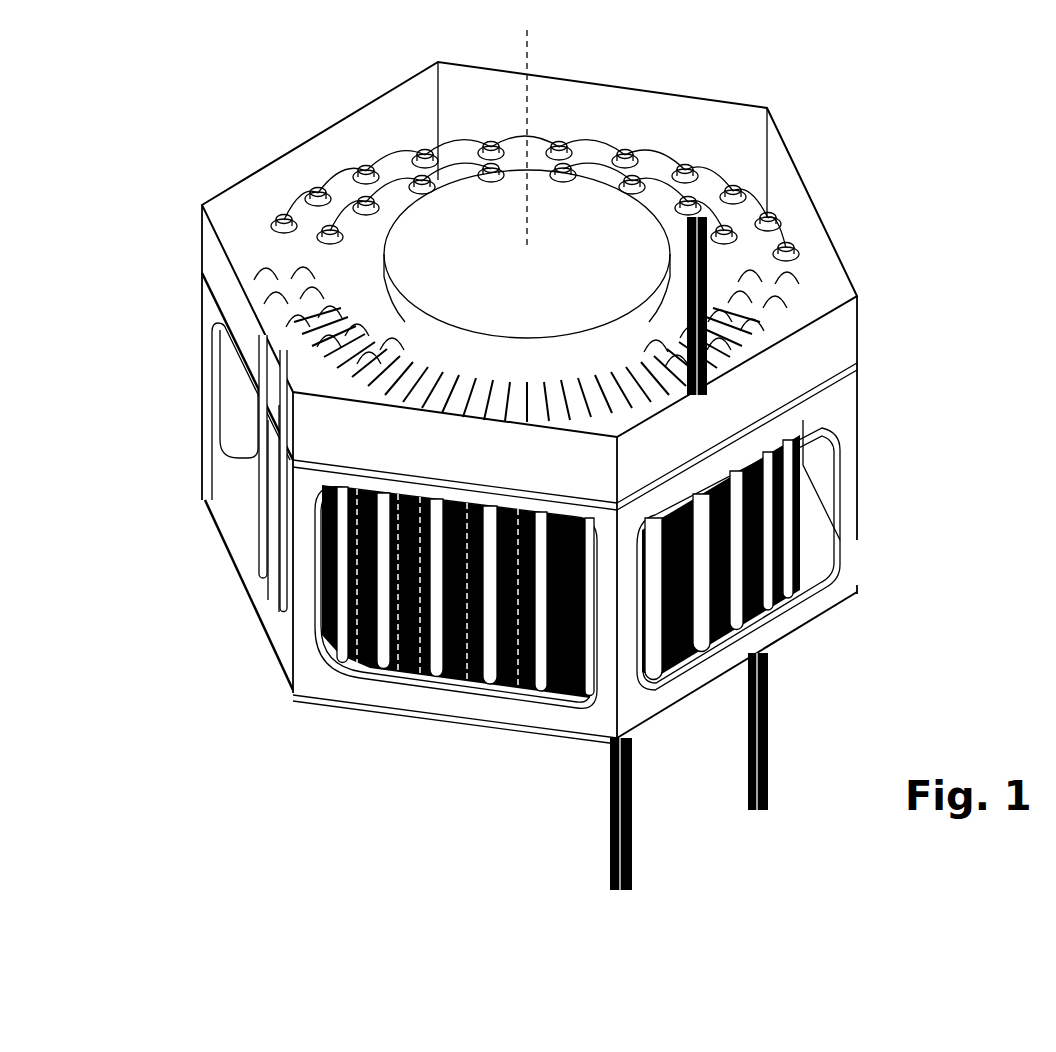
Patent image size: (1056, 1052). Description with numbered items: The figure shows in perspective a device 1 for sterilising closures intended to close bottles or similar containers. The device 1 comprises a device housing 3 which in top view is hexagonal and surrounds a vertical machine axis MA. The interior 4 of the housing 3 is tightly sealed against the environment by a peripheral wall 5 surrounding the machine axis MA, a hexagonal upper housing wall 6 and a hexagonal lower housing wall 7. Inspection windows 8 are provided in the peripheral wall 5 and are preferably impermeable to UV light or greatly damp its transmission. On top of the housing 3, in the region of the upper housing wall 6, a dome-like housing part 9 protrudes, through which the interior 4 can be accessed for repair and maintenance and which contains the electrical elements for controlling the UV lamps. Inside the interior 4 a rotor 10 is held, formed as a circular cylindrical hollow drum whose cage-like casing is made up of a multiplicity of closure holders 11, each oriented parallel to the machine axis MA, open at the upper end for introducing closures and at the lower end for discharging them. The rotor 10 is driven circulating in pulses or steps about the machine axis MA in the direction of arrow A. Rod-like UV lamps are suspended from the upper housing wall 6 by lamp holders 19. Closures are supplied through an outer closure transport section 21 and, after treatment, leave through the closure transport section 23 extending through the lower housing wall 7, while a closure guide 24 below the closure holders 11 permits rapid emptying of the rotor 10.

The device 1 is at (152, 197).
The device housing 3 is at (197, 300).
The interior 4 is at (232, 497).
The peripheral wall 5 is at (860, 417).
The upper housing wall 6 is at (843, 370).
The lower housing wall 7 is at (273, 650).
The inspection windows 8 is at (843, 502).
The housing part 9 is at (467, 268).
The rotor 10 is at (460, 688).
The closure holders 11 is at (408, 665).
The lamp holders 19 is at (765, 215).
The outer closure transport section 21 is at (725, 258).
The closure transport section 23 is at (768, 708).
The closure guide 24 is at (607, 800).
The machine axis MA is at (530, 123).
The arrow A is at (807, 500).